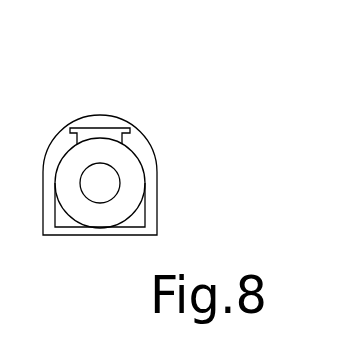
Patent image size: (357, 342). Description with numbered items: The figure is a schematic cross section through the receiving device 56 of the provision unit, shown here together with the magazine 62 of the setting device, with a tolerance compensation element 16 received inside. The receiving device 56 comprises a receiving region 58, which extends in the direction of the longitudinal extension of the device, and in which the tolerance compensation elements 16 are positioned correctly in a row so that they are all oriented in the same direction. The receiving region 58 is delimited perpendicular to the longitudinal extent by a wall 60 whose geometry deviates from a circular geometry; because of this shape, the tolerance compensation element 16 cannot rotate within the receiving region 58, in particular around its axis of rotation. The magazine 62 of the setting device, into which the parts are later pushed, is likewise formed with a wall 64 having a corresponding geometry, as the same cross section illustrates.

The tolerance compensation element 16 is at (101, 133).
The receiving device 56 is at (153, 130).
The magazine 62 is at (153, 130).
The receiving region 58 is at (130, 136).
The wall 60 is at (153, 130).
The wall 64 is at (77, 118).